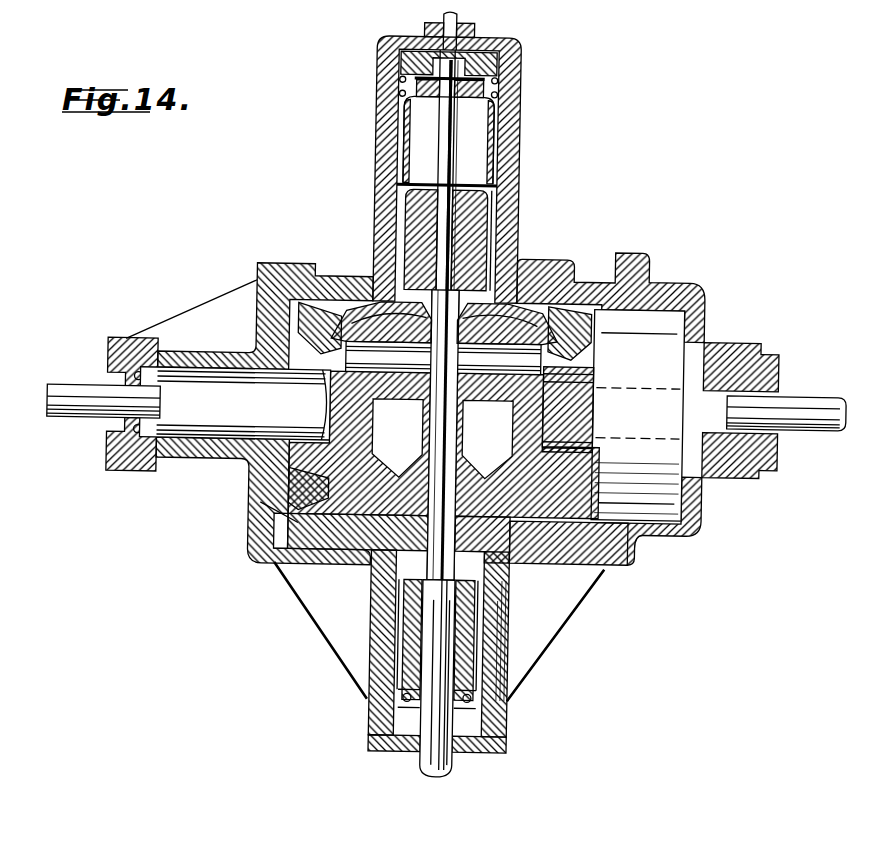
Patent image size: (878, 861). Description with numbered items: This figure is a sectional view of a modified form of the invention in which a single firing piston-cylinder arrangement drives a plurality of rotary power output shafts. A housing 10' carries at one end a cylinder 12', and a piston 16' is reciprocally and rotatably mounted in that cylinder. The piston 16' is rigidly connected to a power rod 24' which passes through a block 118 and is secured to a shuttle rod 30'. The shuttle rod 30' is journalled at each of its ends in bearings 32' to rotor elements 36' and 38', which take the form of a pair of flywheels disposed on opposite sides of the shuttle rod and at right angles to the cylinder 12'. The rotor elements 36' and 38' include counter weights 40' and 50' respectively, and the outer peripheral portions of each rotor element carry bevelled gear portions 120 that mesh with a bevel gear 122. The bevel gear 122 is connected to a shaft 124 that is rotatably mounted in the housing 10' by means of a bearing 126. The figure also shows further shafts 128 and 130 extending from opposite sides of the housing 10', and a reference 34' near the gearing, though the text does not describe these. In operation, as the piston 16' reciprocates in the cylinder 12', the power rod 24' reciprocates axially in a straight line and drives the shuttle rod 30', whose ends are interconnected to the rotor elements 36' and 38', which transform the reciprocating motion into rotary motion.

The housing 10' is at (450, 464).
The cylinder 12' is at (431, 162).
The piston 16' is at (482, 133).
The block 118 is at (482, 236).
The shuttle rod 30' is at (317, 290).
The bearings 32' is at (382, 285).
The bevel gear 34' is at (524, 287).
The bevelled gear portions 120 is at (583, 315).
The bevel gear 122 is at (265, 508).
The input shaft 128 is at (63, 392).
The output shaft 130 is at (822, 403).
The rotor element 36' is at (264, 549).
The counter weight 40' is at (444, 480).
The power rod 24' is at (469, 652).
The counter weight 50' is at (562, 630).
The rotor element 38' is at (622, 563).
The bearing 126 is at (478, 701).
The shaft 124 is at (428, 761).